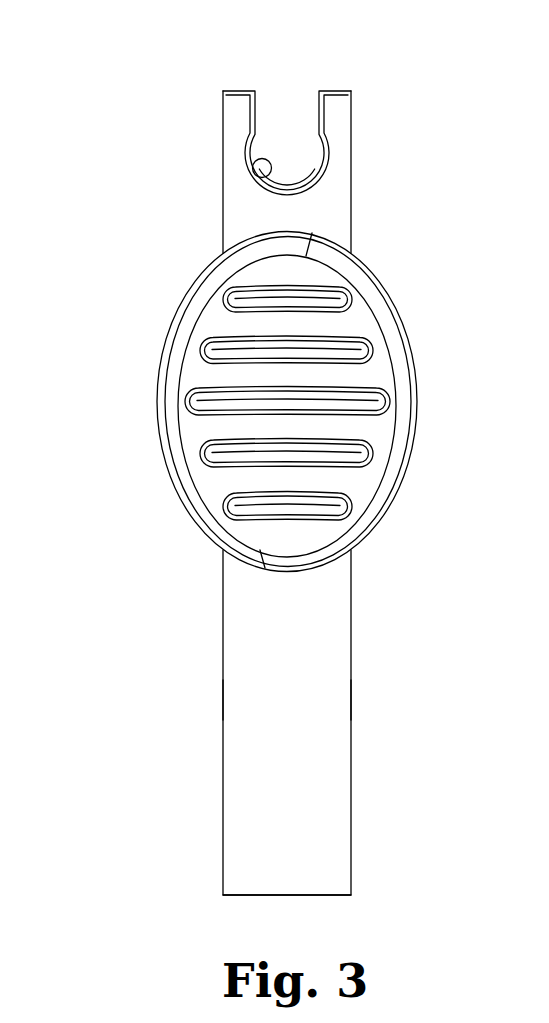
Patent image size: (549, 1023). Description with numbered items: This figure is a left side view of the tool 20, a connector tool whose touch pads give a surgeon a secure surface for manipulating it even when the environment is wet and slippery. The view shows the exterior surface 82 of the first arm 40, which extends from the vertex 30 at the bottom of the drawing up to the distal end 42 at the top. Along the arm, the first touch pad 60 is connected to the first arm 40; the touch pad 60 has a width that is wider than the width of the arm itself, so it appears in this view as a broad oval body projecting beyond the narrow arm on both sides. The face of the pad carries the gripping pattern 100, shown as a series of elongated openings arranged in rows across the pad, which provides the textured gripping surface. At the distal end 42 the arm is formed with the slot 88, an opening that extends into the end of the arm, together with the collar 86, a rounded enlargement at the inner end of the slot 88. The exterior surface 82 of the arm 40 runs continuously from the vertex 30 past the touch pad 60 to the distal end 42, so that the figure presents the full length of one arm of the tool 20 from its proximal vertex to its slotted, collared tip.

The tool 20 is at (128, 148).
The vertex 30 is at (306, 896).
The first arm 40 is at (352, 617).
The distal end 42 is at (340, 91).
The first touch pad 60 is at (404, 397).
The exterior surface 82 is at (316, 696).
The collar 86 is at (253, 176).
The slot 88 is at (287, 92).
The gripping pattern 100 is at (362, 350).